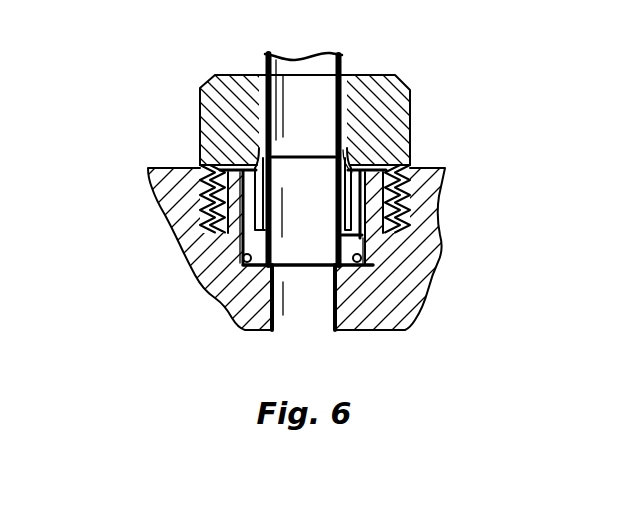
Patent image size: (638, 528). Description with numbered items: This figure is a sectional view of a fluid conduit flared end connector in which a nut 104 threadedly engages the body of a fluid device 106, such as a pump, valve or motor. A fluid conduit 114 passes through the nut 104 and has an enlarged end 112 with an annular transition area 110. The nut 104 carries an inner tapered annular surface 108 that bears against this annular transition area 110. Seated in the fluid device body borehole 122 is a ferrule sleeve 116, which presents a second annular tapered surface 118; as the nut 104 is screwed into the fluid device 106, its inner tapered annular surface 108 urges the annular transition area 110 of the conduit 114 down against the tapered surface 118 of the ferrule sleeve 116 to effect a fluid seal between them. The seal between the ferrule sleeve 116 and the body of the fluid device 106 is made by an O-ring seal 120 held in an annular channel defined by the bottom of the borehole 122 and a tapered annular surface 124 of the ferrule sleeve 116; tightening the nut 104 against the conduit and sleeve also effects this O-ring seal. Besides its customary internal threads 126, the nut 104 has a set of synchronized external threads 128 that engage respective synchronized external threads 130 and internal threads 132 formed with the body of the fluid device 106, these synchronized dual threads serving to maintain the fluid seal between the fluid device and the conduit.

The nut 104 is at (392, 90).
The fluid device 106 is at (317, 285).
The inner tapered annular surface 108 is at (240, 224).
The annular transition area 110 is at (352, 164).
The enlarged end 112 is at (242, 254).
The fluid conduit 114 is at (343, 57).
The ferrule sleeve 116 is at (222, 267).
The second annular tapered surface 118 is at (256, 151).
The O-ring seal 120 is at (400, 300).
The fluid device body borehole 122 is at (365, 260).
The tapered annular surface 124 is at (245, 306).
The internal threads 126 is at (398, 216).
The synchronized external threads 128 is at (405, 186).
The synchronized external threads 130 is at (200, 198).
The internal threads 132 is at (212, 212).